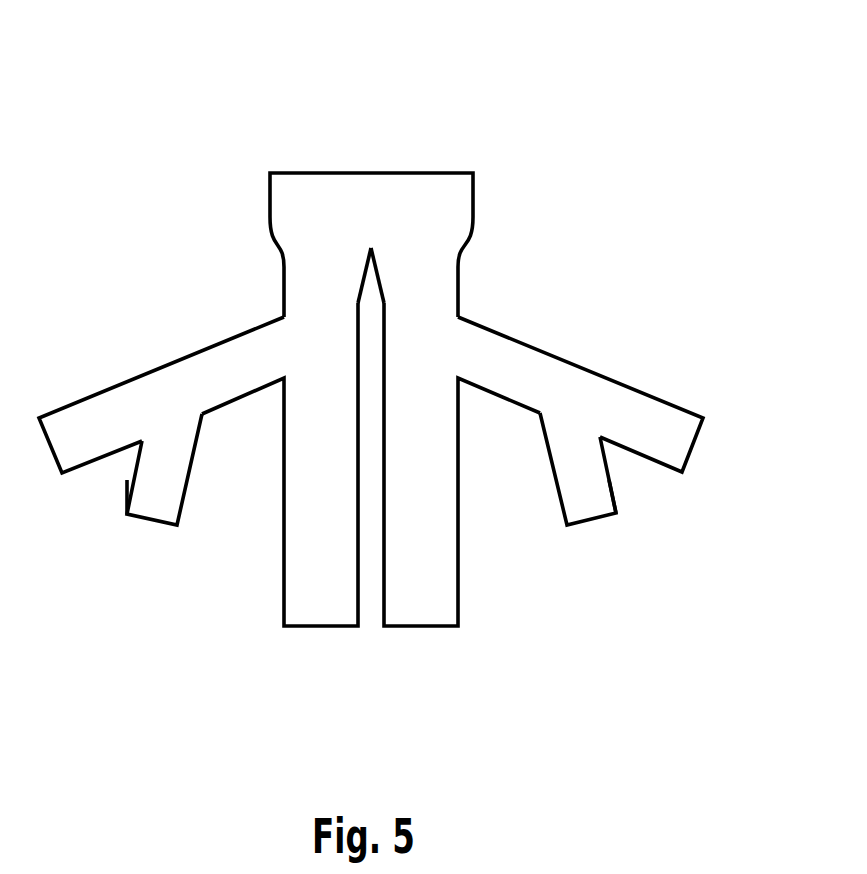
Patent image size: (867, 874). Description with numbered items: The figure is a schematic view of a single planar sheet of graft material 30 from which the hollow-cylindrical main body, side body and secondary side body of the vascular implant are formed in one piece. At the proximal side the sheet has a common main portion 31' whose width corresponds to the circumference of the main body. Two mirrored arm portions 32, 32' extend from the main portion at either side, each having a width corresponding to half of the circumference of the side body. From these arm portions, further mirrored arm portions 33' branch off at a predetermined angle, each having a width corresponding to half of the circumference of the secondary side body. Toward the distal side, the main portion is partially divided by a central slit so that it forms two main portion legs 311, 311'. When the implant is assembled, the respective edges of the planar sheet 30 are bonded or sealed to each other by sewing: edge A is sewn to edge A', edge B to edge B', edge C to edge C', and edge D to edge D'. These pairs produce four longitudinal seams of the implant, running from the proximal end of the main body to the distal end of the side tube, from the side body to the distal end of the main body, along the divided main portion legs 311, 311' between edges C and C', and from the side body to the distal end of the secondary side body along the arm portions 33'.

The planar sheet of graft material 30 is at (479, 97).
The common main portion 31' is at (414, 195).
The arm portion 32 is at (161, 383).
The arm portion 32' is at (580, 382).
The arm portion 33' is at (371, 476).
The main portion leg 311 is at (275, 464).
The main portion leg 311' is at (477, 464).
The edge A is at (246, 267).
The edge A' is at (501, 267).
The edge B is at (243, 439).
The edge B' is at (499, 439).
The edge C is at (350, 472).
The edge C' is at (396, 472).
The edge D is at (92, 498).
The edge D' is at (653, 498).